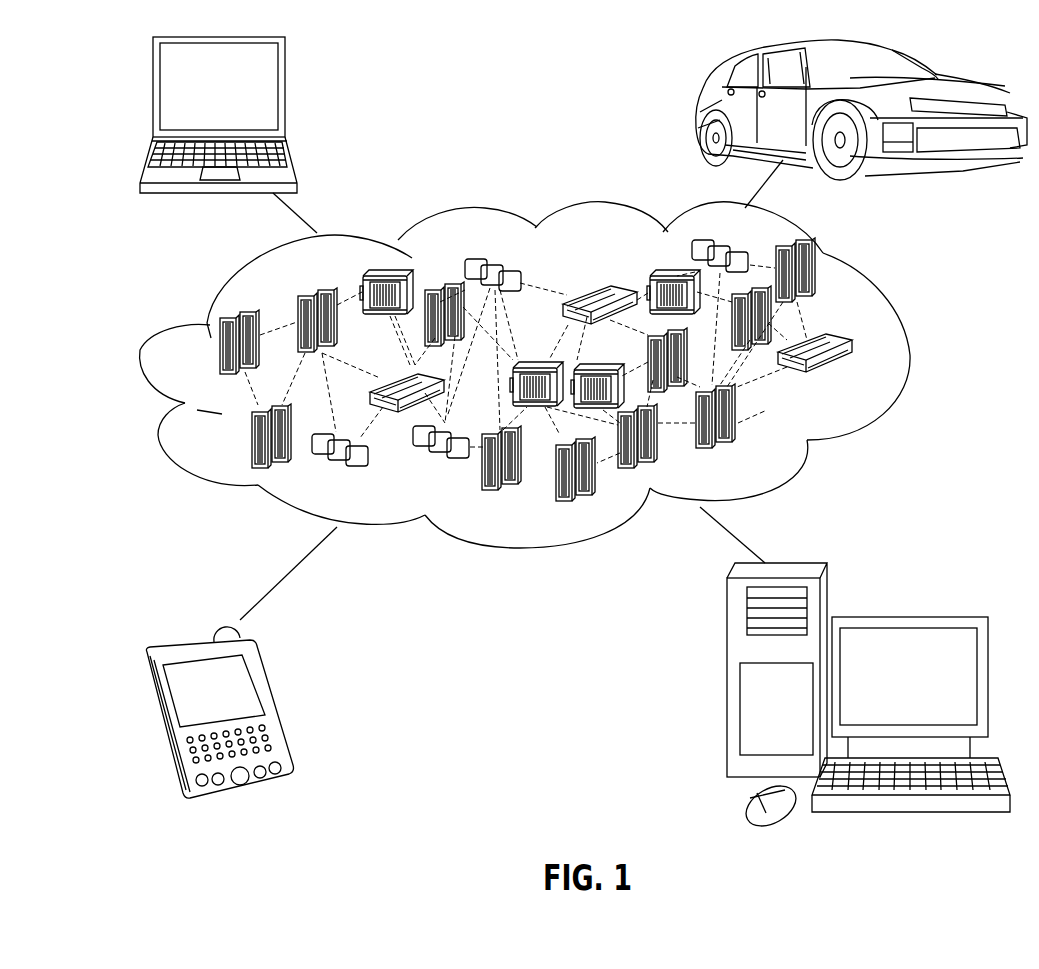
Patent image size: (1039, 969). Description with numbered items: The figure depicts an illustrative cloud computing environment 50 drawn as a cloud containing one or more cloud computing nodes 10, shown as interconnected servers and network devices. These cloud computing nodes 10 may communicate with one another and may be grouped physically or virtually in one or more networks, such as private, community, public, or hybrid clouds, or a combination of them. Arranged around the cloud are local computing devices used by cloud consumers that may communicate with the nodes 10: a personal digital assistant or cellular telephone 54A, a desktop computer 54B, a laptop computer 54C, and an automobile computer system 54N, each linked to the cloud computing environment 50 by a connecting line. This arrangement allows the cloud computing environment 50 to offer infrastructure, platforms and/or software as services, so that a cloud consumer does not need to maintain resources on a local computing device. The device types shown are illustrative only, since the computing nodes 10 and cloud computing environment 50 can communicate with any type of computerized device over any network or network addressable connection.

The cloud computing node 10 is at (860, 380).
The cloud computing environment 50 is at (906, 351).
The personal digital assistant or cellular telephone 54A is at (275, 707).
The desktop computer 54B is at (903, 617).
The laptop computer 54C is at (286, 97).
The automobile computer system 54N is at (700, 110).